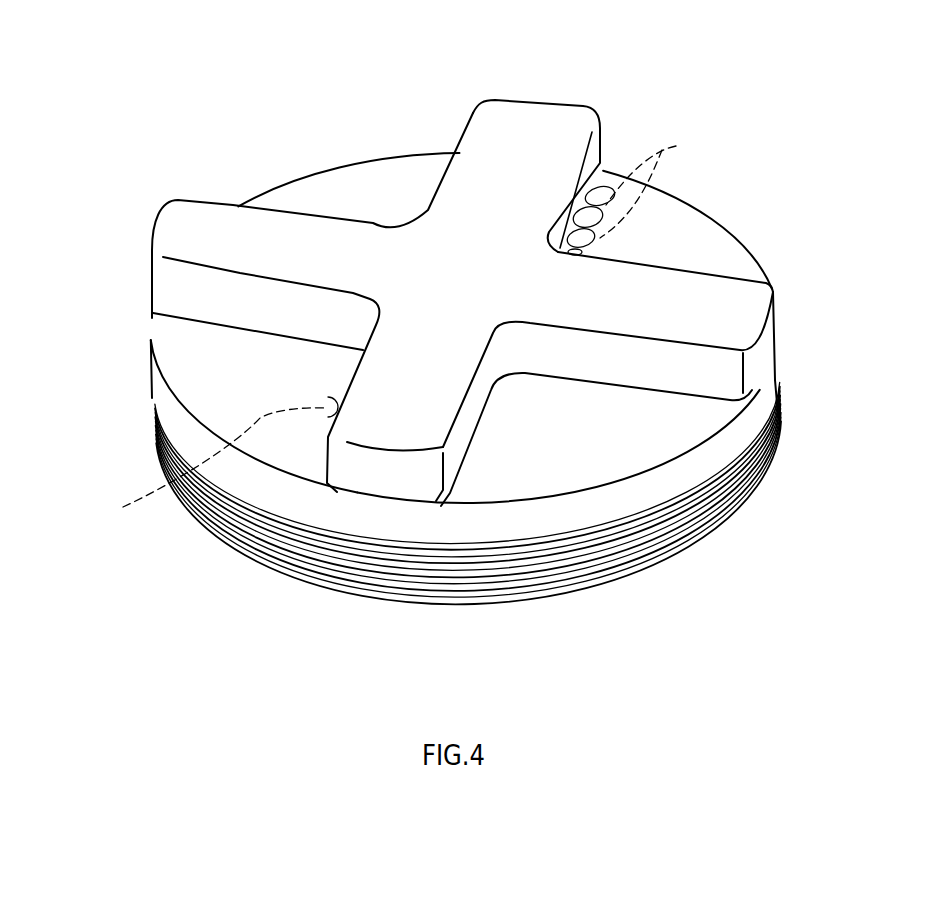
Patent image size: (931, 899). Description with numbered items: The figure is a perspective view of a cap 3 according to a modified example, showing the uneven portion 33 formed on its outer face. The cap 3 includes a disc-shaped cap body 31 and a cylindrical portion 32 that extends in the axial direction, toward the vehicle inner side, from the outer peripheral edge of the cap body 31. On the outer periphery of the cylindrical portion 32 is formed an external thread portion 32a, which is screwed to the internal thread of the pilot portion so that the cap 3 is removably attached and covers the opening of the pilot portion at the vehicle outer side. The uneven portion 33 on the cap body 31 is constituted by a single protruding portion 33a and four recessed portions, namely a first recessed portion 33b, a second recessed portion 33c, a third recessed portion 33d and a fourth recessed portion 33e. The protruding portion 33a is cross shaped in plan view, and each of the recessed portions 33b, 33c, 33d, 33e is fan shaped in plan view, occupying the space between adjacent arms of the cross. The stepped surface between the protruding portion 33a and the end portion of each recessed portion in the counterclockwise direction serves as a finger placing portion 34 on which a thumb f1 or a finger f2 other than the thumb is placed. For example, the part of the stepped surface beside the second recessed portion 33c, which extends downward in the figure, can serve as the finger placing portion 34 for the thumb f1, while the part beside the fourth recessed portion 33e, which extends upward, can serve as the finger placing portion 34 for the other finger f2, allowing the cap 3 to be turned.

The cap 3 is at (457, 355).
The cap body 31 is at (440, 337).
The cylindrical portion 32 is at (470, 517).
The external thread portion 32a is at (563, 578).
The uneven portion 33 is at (499, 261).
The protruding portion 33a is at (540, 120).
The first recessed portion 33b is at (397, 168).
The second recessed portion 33c is at (213, 380).
The third recessed portion 33d is at (630, 447).
The fourth recessed portion 33e is at (707, 237).
The finger placing portion 34 is at (287, 212).
The thumb f1 is at (215, 461).
The finger other than the thumb f2 is at (634, 187).